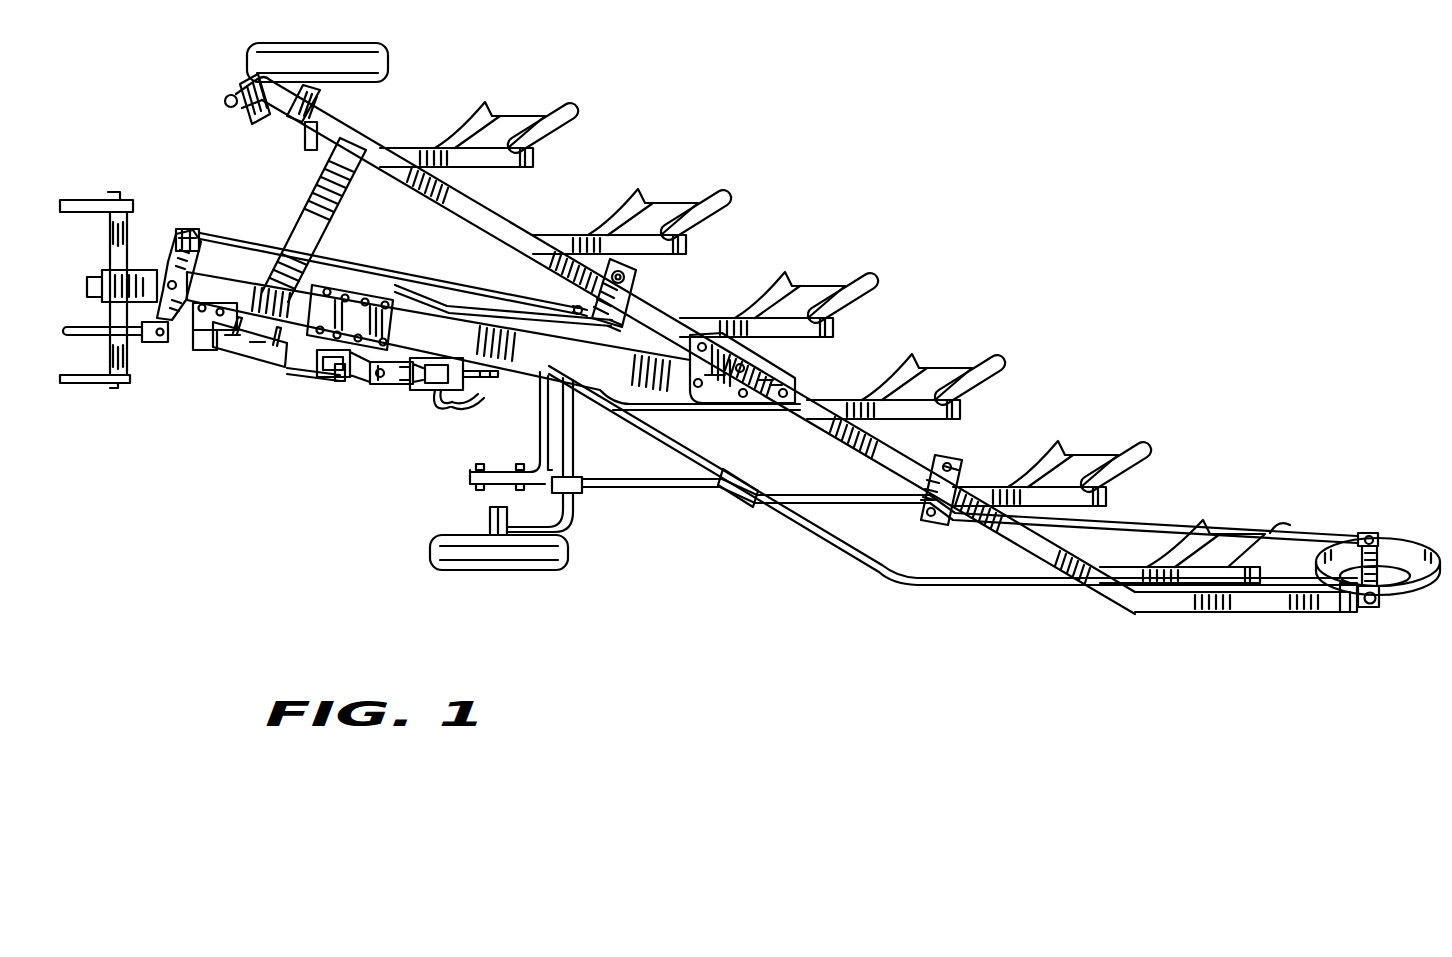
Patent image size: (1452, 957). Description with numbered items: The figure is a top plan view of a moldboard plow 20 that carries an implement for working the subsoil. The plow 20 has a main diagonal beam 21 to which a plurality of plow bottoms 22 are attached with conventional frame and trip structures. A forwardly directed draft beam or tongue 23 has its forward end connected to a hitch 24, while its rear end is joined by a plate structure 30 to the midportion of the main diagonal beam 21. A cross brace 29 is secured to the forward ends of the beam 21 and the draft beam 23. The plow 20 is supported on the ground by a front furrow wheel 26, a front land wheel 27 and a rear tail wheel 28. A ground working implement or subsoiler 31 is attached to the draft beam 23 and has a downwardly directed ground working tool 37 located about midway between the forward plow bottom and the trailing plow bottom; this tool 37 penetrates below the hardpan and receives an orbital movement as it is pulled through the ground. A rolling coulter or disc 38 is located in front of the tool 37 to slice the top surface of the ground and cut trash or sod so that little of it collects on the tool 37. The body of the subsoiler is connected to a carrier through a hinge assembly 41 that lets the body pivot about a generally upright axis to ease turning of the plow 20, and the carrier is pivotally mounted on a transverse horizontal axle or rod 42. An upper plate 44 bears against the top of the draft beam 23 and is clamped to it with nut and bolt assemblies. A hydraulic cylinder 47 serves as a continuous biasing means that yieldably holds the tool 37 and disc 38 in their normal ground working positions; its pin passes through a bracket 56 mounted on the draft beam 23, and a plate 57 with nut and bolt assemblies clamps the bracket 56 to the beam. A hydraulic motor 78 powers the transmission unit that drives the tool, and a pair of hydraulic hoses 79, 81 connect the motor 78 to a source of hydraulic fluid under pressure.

The moldboard plow 20 is at (636, 156).
The main diagonal beam 21 is at (498, 215).
The plow bottoms 22 is at (835, 324).
The draft beam or tongue 23 is at (615, 377).
The hitch 24 is at (95, 200).
The front furrow wheel 26 is at (390, 62).
The front land wheel 27 is at (535, 553).
The rear tail wheel 28 is at (1400, 540).
The cross brace 29 is at (322, 178).
The plate structure 30 is at (773, 373).
The subsoiler 31 is at (205, 378).
The ground working tool 37 is at (492, 382).
The rolling coulter or disc 38 is at (305, 378).
The hinge assembly 41 is at (383, 392).
The transverse horizontal axle or rod 42 is at (358, 385).
The upper plate 44 is at (347, 308).
The hydraulic cylinder 47 is at (245, 368).
The bracket 56 is at (197, 318).
The plate 57 is at (227, 266).
The hydraulic motor 78 is at (442, 358).
The hydraulic line or hose 79 is at (440, 410).
The hydraulic line or hose 81 is at (488, 398).